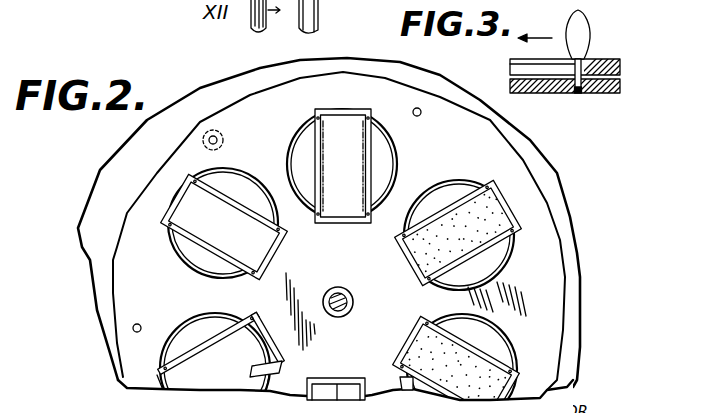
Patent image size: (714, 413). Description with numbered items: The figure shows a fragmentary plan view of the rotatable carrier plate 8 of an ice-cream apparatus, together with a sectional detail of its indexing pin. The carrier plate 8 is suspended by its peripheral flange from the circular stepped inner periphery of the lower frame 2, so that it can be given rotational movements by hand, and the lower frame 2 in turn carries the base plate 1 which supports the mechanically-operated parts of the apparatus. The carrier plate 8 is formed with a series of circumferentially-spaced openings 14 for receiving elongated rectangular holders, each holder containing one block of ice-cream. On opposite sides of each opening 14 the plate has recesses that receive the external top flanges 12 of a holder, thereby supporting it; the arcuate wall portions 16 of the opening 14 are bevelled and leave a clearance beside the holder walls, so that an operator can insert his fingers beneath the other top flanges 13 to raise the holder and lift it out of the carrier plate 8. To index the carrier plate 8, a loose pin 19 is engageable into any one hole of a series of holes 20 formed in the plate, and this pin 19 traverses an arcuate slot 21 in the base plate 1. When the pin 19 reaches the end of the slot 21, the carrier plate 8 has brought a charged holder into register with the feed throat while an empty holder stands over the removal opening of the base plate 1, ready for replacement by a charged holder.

In FIG. 3, the base plate 1 is at (620, 67).
In FIG. 2, the lower frame 2 is at (568, 247).
In FIG. 2, the carrier plate 8 is at (550, 333).
In FIG. 3, the carrier plate 8 is at (620, 87).
In FIG. 2, the external top flanges 12 is at (510, 212).
In FIG. 2, the external top flanges 13 is at (460, 202).
In FIG. 2, the openings 14 is at (243, 193).
In FIG. 2, the arcuate wall portions 16 is at (423, 190).
In FIG. 2, the loose pin 19 is at (212, 128).
In FIG. 3, the loose pin 19 is at (583, 68).
In FIG. 2, the holes 20 is at (418, 108).
In FIG. 3, the holes 20 is at (578, 96).
In FIG. 3, the arcuate slot 21 is at (515, 67).